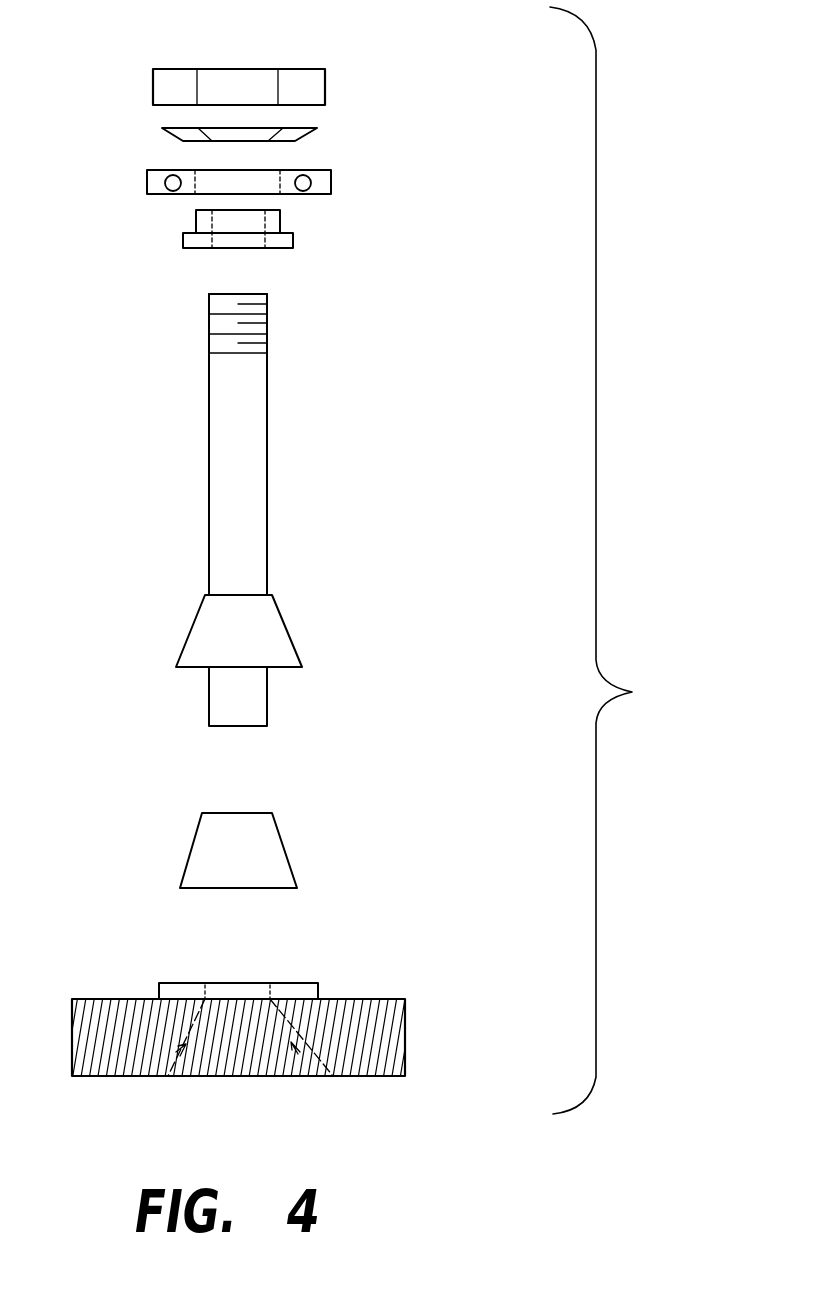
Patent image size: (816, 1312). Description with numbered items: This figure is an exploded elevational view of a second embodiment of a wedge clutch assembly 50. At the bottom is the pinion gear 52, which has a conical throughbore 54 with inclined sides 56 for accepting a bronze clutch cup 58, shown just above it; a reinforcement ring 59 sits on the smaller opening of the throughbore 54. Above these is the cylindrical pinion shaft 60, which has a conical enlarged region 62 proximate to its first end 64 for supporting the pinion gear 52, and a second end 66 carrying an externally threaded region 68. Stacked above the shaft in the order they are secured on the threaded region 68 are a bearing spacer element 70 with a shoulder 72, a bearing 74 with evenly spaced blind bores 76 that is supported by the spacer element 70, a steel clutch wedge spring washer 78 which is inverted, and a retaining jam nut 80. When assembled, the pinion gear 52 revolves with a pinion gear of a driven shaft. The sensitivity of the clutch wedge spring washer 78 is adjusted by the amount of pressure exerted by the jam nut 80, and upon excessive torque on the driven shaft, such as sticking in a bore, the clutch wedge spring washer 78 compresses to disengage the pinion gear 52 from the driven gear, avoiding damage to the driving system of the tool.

The wedge clutch assembly 50 is at (617, 560).
The pinion gear 52 is at (408, 1027).
The conical throughbore 54 is at (245, 1050).
The inclined sides 56 is at (185, 1045).
The bronze clutch cup 58 is at (262, 867).
The reinforcement ring 59 is at (165, 983).
The cylindrical pinion shaft 60 is at (258, 445).
The conical enlarged region 62 is at (257, 653).
The first end 64 is at (239, 726).
The second end 66 is at (243, 285).
The externally threaded region 68 is at (267, 332).
The bearing spacer element 70 is at (190, 212).
The shoulder 72 is at (278, 241).
The bearing 74 is at (147, 178).
The blind bores 76 is at (173, 181).
The clutch wedge spring washer 78 is at (308, 131).
The retaining jam nut 80 is at (264, 70).